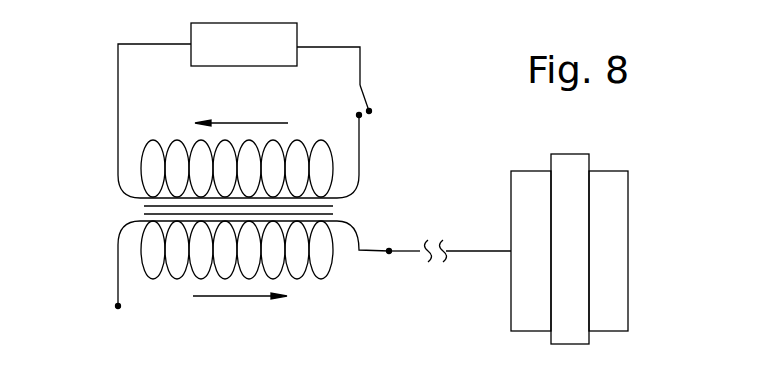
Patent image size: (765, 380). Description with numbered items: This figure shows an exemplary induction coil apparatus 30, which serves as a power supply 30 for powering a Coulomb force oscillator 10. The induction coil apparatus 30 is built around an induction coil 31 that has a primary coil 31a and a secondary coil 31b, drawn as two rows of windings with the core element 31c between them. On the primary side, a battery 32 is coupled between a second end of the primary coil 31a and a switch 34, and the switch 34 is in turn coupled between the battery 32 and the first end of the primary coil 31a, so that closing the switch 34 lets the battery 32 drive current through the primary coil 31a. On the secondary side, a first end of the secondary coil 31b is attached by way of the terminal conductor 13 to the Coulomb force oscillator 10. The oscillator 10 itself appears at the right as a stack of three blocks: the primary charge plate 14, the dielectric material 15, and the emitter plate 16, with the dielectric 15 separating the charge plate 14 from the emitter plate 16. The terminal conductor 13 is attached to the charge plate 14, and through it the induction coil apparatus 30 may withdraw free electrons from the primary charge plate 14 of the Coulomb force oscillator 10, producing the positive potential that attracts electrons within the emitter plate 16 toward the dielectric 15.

The Coulomb force oscillator 10 is at (588, 233).
The terminal conductor 13 is at (472, 247).
The primary charge plate 14 is at (511, 186).
The dielectric material 15 is at (561, 154).
The emitter plate 16 is at (628, 237).
The induction coil apparatus 30 is at (403, 292).
The induction coil 31 is at (215, 213).
The primary coil 31a is at (322, 140).
The secondary coil 31b is at (322, 279).
The core 31c is at (133, 206).
The battery 32 is at (298, 29).
The switch 34 is at (383, 112).